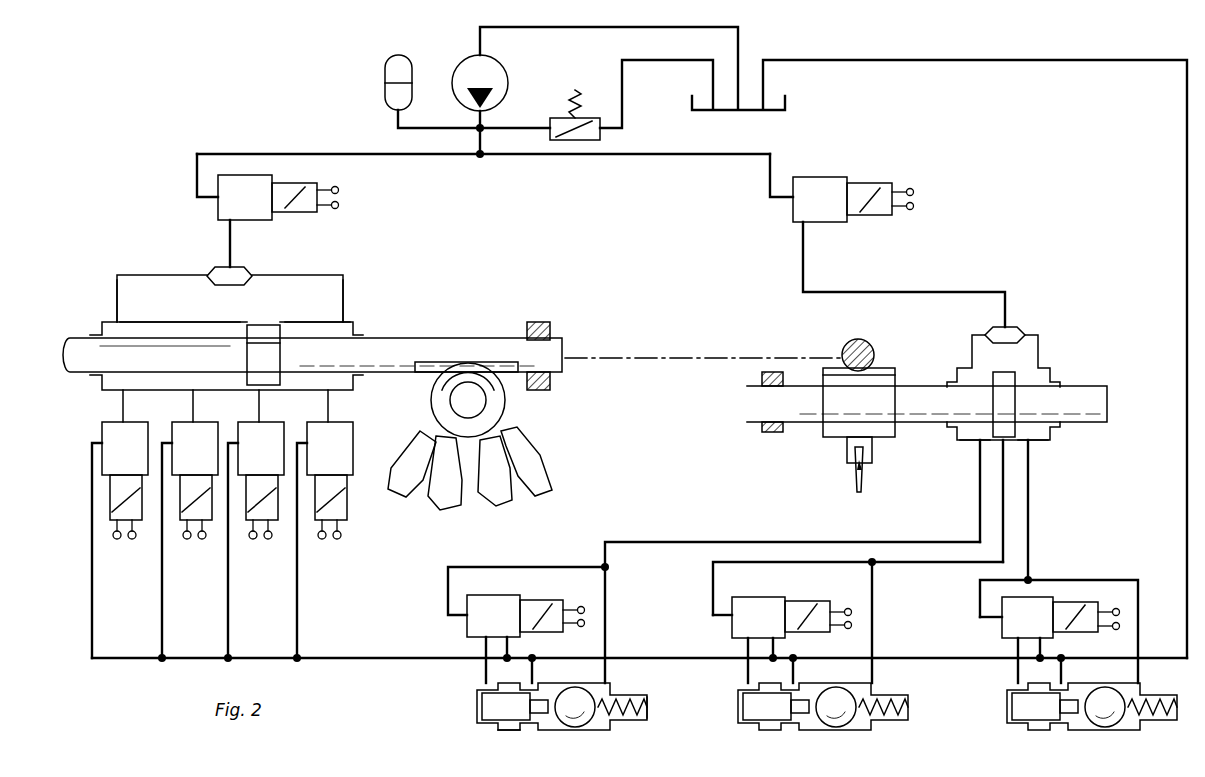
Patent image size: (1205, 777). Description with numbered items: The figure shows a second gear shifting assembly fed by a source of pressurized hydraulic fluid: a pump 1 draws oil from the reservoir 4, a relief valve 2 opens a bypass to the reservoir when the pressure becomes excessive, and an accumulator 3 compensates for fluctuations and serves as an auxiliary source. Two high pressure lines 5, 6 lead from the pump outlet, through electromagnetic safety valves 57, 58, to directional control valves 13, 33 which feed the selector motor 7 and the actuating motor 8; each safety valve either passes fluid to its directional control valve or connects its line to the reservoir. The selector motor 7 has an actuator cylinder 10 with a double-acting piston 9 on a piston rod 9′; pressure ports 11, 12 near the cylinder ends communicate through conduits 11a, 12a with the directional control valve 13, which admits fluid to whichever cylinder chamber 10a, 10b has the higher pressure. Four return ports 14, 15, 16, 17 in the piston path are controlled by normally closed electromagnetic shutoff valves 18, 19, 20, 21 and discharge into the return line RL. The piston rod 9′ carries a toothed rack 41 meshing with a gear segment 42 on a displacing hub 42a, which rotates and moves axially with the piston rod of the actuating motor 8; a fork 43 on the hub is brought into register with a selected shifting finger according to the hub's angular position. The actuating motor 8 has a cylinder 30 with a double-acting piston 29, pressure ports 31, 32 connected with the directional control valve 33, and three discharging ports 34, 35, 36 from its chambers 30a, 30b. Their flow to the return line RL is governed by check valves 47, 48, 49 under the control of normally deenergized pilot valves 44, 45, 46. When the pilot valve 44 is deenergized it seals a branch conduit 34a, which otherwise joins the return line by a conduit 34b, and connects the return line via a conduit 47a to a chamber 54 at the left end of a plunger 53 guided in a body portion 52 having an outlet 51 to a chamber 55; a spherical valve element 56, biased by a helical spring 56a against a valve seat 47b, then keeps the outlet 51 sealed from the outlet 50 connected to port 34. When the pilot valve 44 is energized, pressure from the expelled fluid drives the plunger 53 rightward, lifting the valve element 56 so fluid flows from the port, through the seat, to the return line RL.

The pump 1 is at (494, 72).
The relief valve 2 is at (562, 122).
The accumulator 3 is at (385, 75).
The reservoir 4 is at (788, 104).
The high pressure line 5 is at (384, 156).
The high pressure line 6 is at (638, 157).
The selector motor 7 is at (116, 256).
The actuating motor 8 is at (1084, 340).
The actuator piston 9 is at (262, 330).
The piston rod 9′ is at (170, 350).
The actuator cylinder 10 is at (98, 386).
The cylinder chamber 10a is at (199, 330).
The cylinder chamber 10b is at (305, 330).
The pressure port 11 is at (114, 318).
The conduit 11a is at (115, 300).
The pressure port 12 is at (352, 320).
The conduit 12a is at (345, 291).
The directional control valve 13 is at (248, 266).
The return port 14 is at (121, 407).
The return port 15 is at (191, 407).
The return port 16 is at (257, 407).
The return port 17 is at (326, 407).
The electromagnetic shutoff valve 18 is at (134, 436).
The electromagnetic shutoff valve 19 is at (204, 436).
The electromagnetic shutoff valve 20 is at (270, 436).
The electromagnetic shutoff valve 21 is at (338, 436).
The actuator piston 29 is at (1000, 372).
The actuator cylinder 30 is at (1050, 438).
The cylinder chamber 30a is at (960, 438).
The cylinder chamber 30b is at (1040, 452).
The pressure port 31 is at (971, 360).
The pressure port 32 is at (1040, 358).
The directional control valve 33 is at (1015, 326).
The discharging port 34 is at (640, 541).
The branch conduit 34a is at (534, 566).
The conduit 34b is at (503, 646).
The discharging port 35 is at (915, 563).
The discharging port 36 is at (1084, 579).
The toothed rack 41 is at (497, 361).
The gear segment 42 is at (500, 384).
The displacing hub 42a is at (497, 410).
The fork 43 is at (446, 436).
The pilot valve 44 is at (510, 604).
The pilot valve 45 is at (768, 606).
The pilot valve 46 is at (1000, 629).
The check valve 47 is at (478, 720).
The conduit 47a is at (484, 647).
The valve seat 47b is at (558, 686).
The check valve 48 is at (739, 722).
The check valve 49 is at (1008, 724).
The outlet 50 is at (606, 667).
The outlet 51 is at (535, 668).
The body portion 52 is at (512, 722).
The plunger 53 is at (481, 694).
The chamber 54 is at (478, 712).
The chamber 55 is at (560, 724).
The spherical valve element 56 is at (564, 690).
The helical spring 56a is at (648, 702).
The safety valve 57 is at (228, 206).
The safety valve 58 is at (802, 207).
The return line RL is at (978, 58).